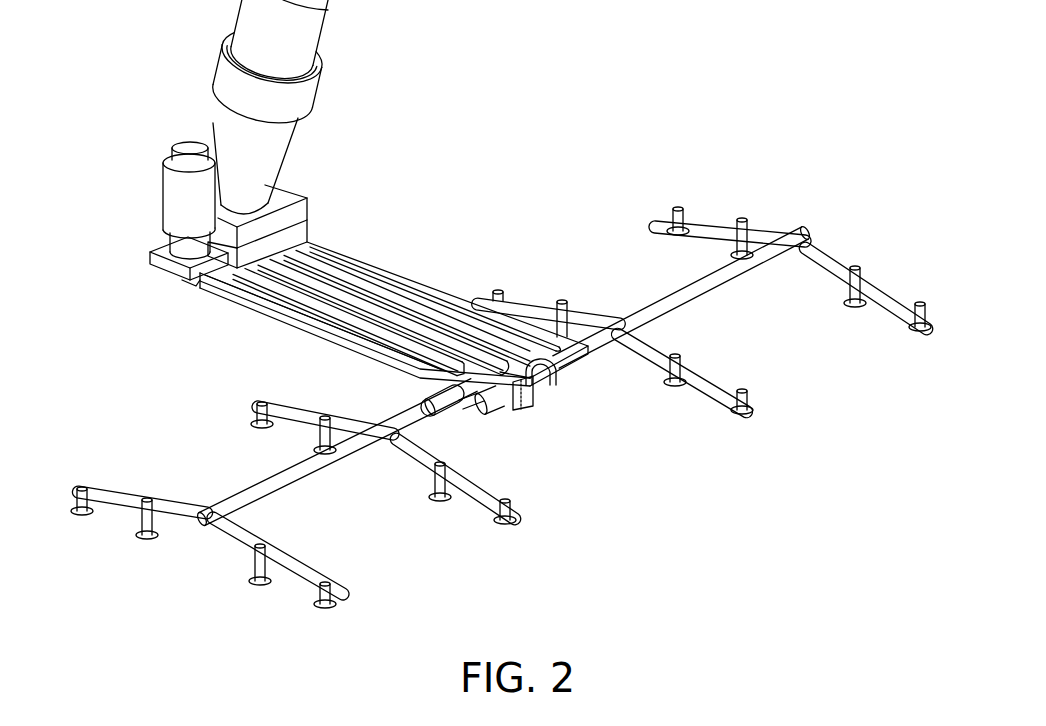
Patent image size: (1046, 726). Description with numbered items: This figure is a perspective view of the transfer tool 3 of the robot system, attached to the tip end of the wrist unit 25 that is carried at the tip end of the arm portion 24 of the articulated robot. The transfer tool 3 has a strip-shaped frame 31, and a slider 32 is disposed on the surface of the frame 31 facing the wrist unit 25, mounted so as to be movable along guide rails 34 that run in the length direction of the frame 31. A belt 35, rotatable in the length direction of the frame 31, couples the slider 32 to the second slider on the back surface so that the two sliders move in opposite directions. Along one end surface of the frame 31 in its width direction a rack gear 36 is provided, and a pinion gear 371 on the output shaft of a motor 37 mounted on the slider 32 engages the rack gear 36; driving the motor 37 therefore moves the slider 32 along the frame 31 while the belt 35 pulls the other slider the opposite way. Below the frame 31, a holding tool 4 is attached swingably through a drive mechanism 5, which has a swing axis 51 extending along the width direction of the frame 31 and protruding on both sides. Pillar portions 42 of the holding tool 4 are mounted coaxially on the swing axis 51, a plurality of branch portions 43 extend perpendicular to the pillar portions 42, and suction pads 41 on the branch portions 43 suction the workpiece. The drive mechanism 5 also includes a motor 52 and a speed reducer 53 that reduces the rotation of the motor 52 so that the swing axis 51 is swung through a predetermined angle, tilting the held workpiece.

The transfer tool 3 is at (414, 232).
The holding tool 4 is at (838, 220).
The drive mechanism 5 is at (557, 392).
The arm portion 24 is at (303, 35).
The wrist unit 25 is at (217, 118).
The frame 31 is at (348, 254).
The slider 32 is at (301, 212).
The guide rails 34 is at (426, 292).
The belt 35 is at (488, 340).
The rack gear 36 is at (256, 297).
The motor 37 is at (173, 191).
The pinion gear 371 is at (190, 282).
The suction pads 41 is at (922, 330).
The pillar portions 42 is at (705, 292).
The branch portions 43 is at (692, 226).
The swing axis 51 is at (469, 410).
The motor 52 is at (508, 404).
The speed reducer 53 is at (538, 404).